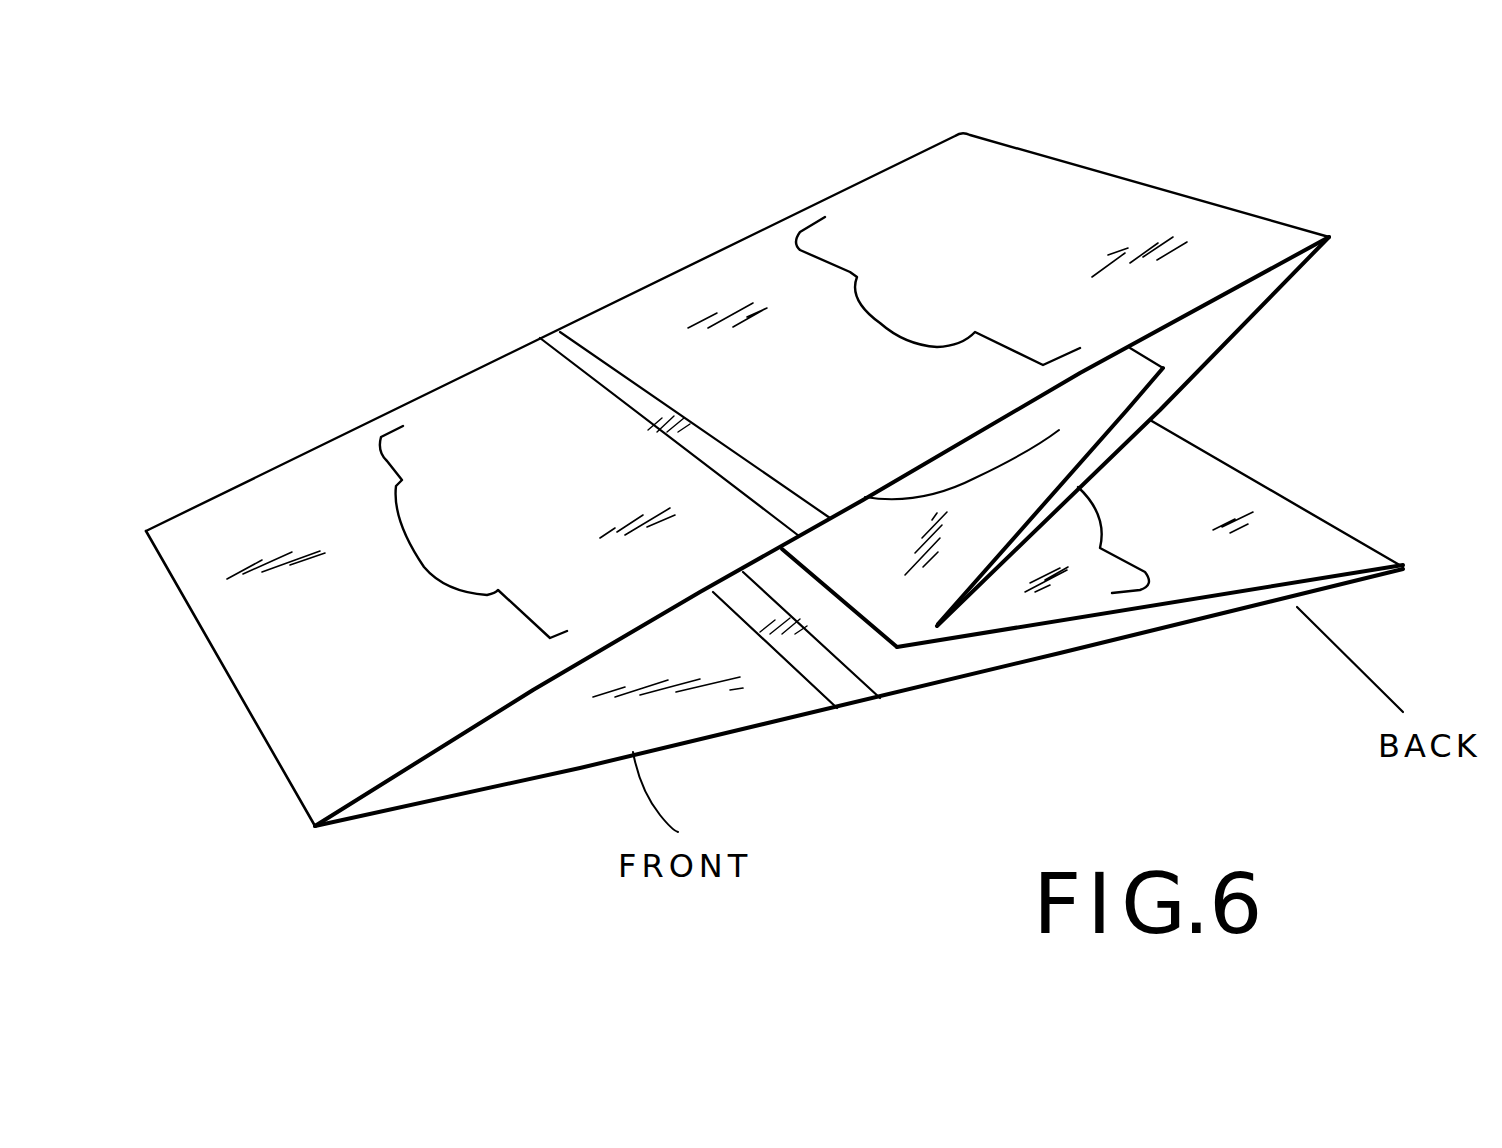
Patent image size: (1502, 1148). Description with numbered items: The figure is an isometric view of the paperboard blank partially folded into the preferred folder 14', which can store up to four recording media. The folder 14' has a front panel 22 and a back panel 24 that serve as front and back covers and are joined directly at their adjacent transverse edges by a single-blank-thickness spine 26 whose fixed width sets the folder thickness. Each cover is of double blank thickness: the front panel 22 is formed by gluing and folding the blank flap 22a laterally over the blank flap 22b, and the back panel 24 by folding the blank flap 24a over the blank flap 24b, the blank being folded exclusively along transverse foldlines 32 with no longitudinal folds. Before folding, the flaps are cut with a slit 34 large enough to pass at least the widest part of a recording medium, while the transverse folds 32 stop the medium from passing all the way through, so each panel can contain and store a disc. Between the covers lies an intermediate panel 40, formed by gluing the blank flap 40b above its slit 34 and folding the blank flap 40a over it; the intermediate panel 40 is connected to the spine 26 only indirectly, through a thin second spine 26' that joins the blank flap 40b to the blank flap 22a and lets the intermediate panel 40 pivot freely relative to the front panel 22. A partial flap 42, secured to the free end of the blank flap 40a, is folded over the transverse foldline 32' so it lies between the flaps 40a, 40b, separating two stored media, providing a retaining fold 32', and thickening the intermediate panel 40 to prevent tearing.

The folder 14' is at (774, 479).
The front panel 22 is at (475, 703).
The blank flap 22a is at (394, 685).
The blank flap 22b is at (703, 715).
The back panel 24 is at (1153, 622).
The blank flap 24a is at (1313, 555).
The blank flap 24b is at (1070, 642).
The spine 26 is at (846, 676).
The second spine 26' is at (679, 369).
The transverse foldline 32 is at (813, 473).
The transverse foldline 32' is at (943, 645).
The slit 34 is at (880, 323).
The intermediate panel 40 is at (1198, 275).
The blank flap 40a is at (1202, 330).
The blank flap 40b is at (918, 401).
The partial flap 42 is at (1115, 383).